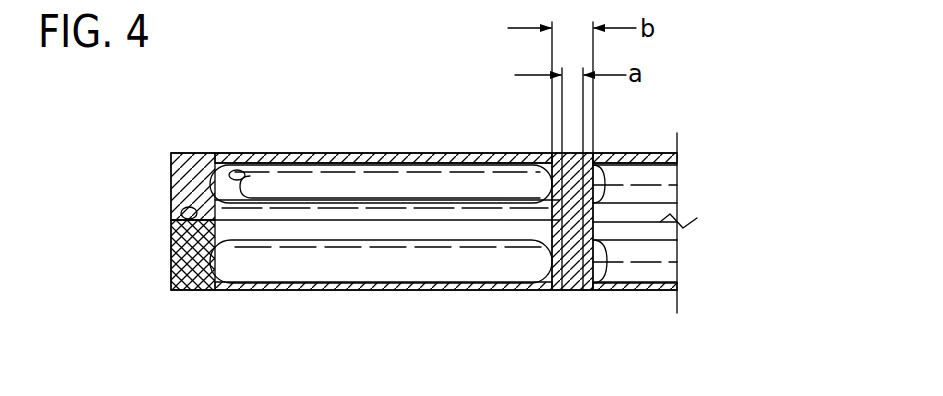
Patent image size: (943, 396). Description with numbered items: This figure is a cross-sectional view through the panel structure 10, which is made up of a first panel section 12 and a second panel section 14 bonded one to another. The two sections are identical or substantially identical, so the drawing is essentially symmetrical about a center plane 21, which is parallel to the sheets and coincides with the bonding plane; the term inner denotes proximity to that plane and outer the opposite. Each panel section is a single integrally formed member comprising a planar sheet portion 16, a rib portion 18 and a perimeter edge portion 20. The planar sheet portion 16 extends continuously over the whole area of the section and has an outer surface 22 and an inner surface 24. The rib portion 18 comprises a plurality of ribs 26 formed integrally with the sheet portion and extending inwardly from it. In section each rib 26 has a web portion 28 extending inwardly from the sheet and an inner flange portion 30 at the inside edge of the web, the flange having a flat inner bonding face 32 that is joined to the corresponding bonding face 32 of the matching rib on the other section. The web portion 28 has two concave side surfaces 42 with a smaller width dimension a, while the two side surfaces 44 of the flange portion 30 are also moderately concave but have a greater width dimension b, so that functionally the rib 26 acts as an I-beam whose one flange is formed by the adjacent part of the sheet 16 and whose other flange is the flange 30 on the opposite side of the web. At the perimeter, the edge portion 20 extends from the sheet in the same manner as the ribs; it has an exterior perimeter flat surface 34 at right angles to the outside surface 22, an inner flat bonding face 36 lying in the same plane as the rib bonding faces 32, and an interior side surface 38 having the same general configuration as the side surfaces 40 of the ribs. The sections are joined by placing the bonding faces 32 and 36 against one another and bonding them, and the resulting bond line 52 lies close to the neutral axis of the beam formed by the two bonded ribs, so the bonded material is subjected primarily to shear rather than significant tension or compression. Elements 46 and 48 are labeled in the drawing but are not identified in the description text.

The panel structure 10 is at (157, 128).
The first panel section 12 is at (166, 156).
The second panel section 14 is at (166, 272).
The planar sheet portion 16 is at (415, 153).
The rib portion 18 is at (600, 192).
The perimeter edge portion 20 is at (170, 178).
The center plane 21 is at (355, 222).
The outer surface 22 is at (400, 163).
The inner surface 24 is at (375, 165).
The rib 26 is at (600, 205).
The web portion 28 is at (600, 275).
The inner flange portion 30 is at (600, 242).
The bonding face 32 is at (560, 270).
The exterior perimeter flat surface 34 is at (170, 201).
The inner flat bonding face 36 is at (183, 215).
The interior side surface 38 is at (238, 170).
The side surface 40 is at (552, 170).
The concave side surface 42 is at (555, 172).
The side surface 44 is at (600, 250).
The tube wall 46 is at (250, 200).
The tube 48 is at (250, 176).
The bond line 52 is at (574, 270).